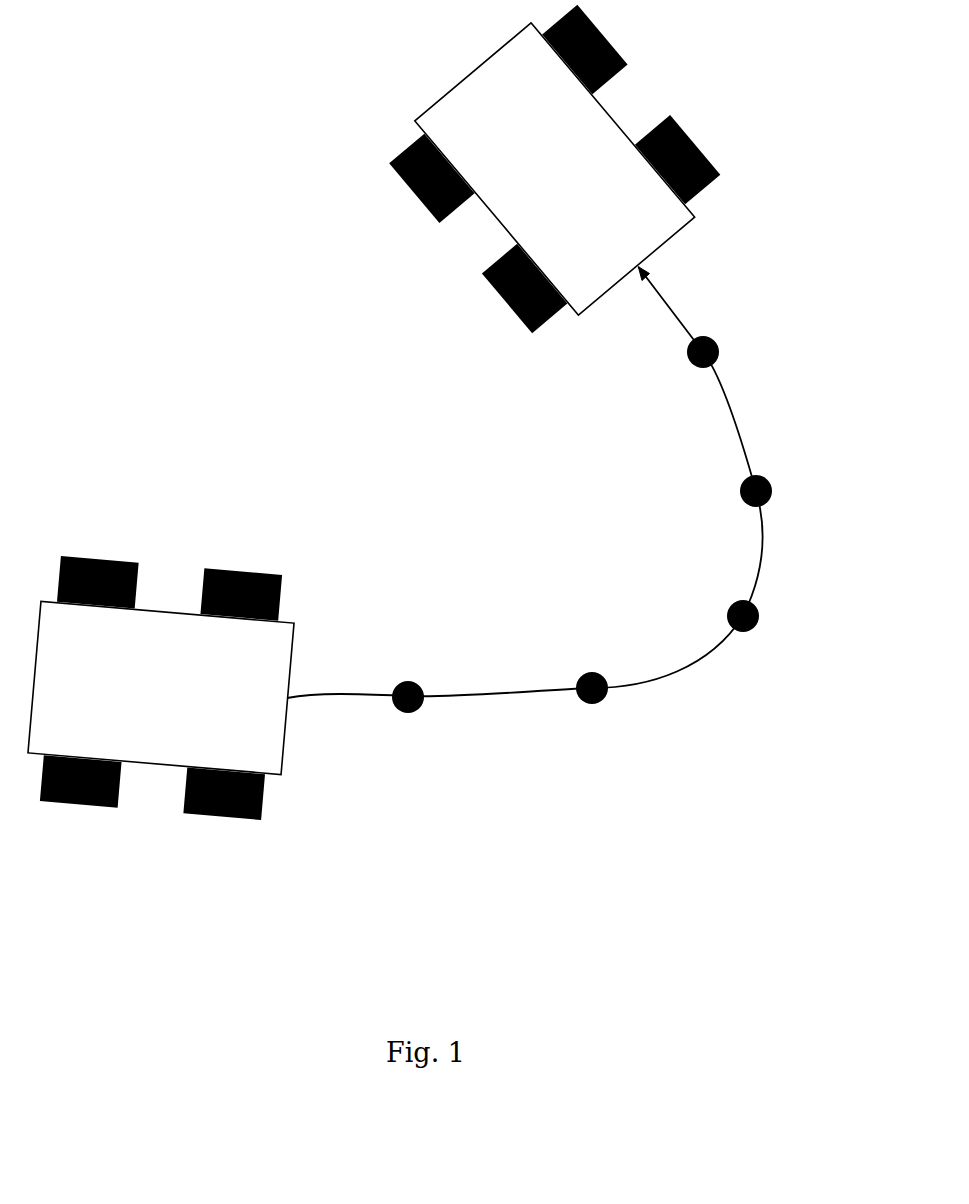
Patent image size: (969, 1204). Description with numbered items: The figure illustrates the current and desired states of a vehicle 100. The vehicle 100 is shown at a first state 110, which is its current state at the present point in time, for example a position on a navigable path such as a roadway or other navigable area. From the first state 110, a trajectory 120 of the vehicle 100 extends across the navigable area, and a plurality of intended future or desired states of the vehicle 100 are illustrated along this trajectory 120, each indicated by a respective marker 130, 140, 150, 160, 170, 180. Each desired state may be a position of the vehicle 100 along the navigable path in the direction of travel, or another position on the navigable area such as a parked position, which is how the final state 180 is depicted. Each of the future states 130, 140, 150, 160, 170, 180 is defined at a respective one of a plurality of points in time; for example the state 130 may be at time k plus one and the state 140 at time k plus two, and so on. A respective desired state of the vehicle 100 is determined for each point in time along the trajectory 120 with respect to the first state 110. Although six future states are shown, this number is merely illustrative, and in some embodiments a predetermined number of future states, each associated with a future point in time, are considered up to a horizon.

The vehicle 100 is at (300, 295).
The first state 110 is at (161, 688).
The trajectory 120 is at (682, 675).
The marker 130 is at (415, 719).
The marker 140 is at (601, 704).
The marker 150 is at (765, 627).
The marker 160 is at (781, 495).
The marker 170 is at (724, 354).
The marker 180 is at (555, 172).